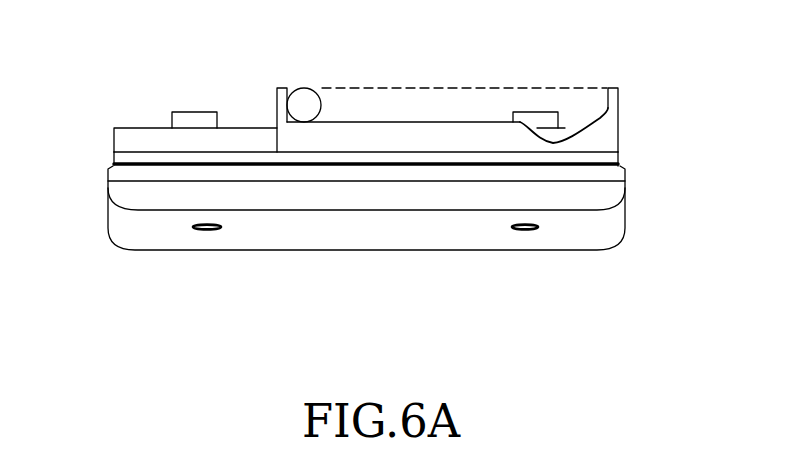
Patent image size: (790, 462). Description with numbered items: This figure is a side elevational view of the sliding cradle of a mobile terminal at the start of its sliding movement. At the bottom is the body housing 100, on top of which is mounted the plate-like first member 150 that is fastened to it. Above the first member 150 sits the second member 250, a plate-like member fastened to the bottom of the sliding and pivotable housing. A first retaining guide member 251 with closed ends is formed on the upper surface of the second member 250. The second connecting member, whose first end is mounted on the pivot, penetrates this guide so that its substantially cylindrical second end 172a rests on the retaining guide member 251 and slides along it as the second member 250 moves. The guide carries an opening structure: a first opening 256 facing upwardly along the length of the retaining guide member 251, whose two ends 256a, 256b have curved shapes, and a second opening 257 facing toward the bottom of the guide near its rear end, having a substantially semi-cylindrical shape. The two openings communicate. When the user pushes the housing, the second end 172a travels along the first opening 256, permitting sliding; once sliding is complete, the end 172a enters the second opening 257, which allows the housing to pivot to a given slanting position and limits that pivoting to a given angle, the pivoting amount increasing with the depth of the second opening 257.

The body housing 100 is at (372, 238).
The first member 150 is at (617, 176).
The second member 250 is at (617, 156).
The first retaining guide member 251 is at (377, 133).
The first opening 256 is at (455, 105).
The end of the first opening 256a is at (288, 116).
The end of the first opening 256b is at (610, 115).
The second opening 257 is at (560, 133).
The second end of the second connecting member 172a is at (305, 98).